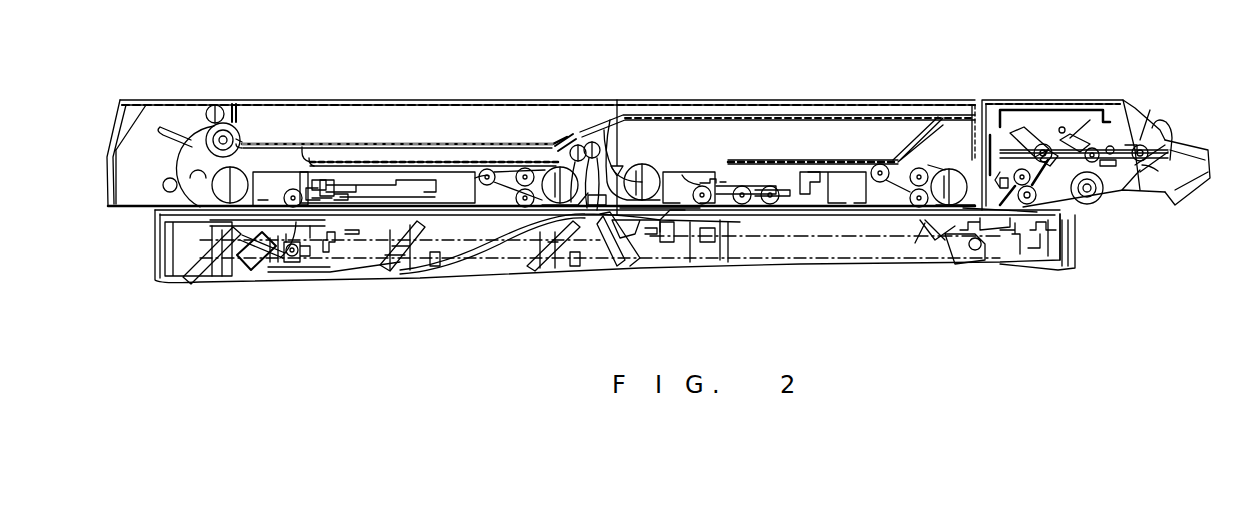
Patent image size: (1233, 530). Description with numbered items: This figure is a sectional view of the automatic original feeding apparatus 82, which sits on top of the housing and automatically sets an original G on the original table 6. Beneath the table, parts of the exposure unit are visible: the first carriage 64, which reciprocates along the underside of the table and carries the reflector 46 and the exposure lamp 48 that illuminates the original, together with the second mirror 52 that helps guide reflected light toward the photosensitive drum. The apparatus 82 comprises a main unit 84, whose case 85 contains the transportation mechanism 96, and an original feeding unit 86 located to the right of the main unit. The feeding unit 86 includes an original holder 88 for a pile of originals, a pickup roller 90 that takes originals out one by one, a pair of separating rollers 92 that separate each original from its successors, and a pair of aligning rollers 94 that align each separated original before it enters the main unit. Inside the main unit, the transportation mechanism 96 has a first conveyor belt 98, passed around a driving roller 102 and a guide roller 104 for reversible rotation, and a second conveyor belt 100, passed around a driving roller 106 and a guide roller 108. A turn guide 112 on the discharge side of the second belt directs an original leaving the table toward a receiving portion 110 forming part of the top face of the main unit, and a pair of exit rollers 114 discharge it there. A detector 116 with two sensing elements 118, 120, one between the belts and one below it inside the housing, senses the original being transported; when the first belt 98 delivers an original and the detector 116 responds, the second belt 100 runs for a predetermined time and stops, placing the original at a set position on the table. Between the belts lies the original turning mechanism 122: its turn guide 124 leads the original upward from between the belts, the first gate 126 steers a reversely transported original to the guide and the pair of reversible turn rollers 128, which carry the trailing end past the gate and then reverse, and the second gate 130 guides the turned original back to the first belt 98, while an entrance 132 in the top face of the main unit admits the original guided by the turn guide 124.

The original table 6 is at (832, 208).
The reflector 46 is at (274, 265).
The exposure lamp 48 is at (292, 267).
The second mirror 52 is at (190, 275).
The first carriage 64 is at (303, 278).
The automatic original feeding apparatus 82 is at (806, 102).
The main unit 84 is at (676, 102).
The case 85 is at (437, 99).
The original feeding unit 86 is at (1074, 104).
The original holder 88 is at (1196, 151).
The pickup roller 90 is at (1148, 176).
The separating rollers 92 is at (1098, 202).
The aligning rollers 94 is at (1058, 214).
The transportation mechanism 96 is at (696, 160).
The first conveyor belt 98 is at (912, 166).
The second conveyor belt 100 is at (505, 178).
The driving roller 102 is at (948, 183).
The guide roller 104 is at (650, 184).
The driving roller 106 is at (553, 174).
The guide roller 108 is at (236, 179).
The receiving portion 110 is at (380, 144).
The turn guide 112 is at (204, 136).
The exit rollers 114 is at (223, 142).
The detector 116 is at (623, 168).
The sensing element 118 is at (618, 160).
The sensing element 120 is at (618, 262).
The original turning mechanism 122 is at (575, 136).
The turn guide 124 is at (604, 130).
The first gate 126 is at (582, 224).
The turn rollers 128 is at (569, 130).
The second gate 130 is at (593, 140).
The entrance 132 is at (580, 130).
The original G is at (1154, 172).